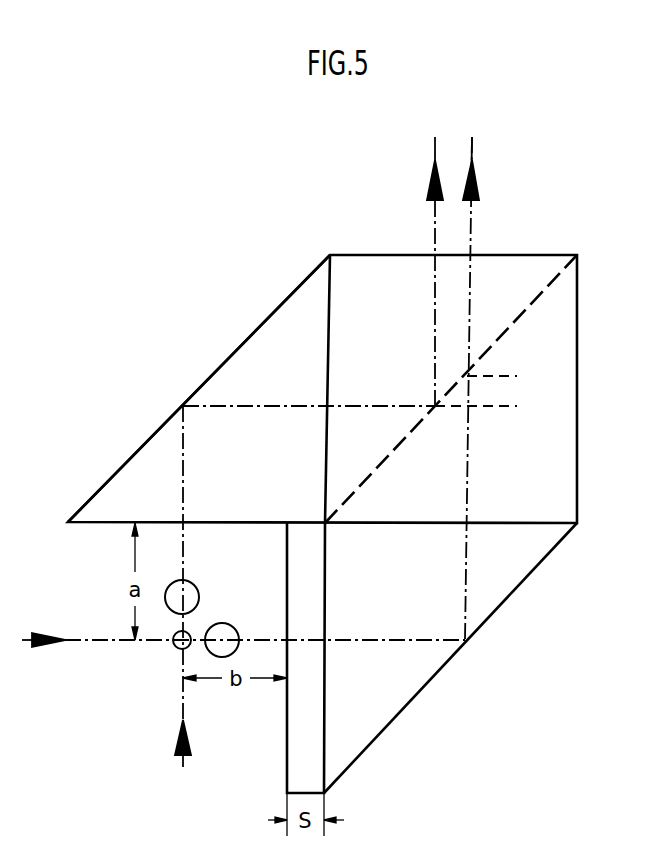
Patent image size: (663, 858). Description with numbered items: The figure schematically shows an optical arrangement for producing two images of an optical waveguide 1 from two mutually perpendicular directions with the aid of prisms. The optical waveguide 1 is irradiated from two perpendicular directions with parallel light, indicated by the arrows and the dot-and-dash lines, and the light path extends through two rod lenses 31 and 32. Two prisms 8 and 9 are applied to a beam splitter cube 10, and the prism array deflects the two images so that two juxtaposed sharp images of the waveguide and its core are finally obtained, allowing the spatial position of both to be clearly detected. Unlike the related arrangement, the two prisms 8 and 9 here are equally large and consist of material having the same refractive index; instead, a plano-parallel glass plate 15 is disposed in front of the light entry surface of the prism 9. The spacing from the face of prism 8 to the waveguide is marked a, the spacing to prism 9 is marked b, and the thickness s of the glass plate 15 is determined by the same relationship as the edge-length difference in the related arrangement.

The optical waveguide 1 is at (176, 646).
The prism 8 is at (198, 389).
The prism 9 is at (484, 613).
The beam splitter cube 10 is at (565, 420).
The plano-parallel glass plate 15 is at (300, 751).
The rod lens 31 is at (195, 584).
The rod lens 32 is at (234, 628).